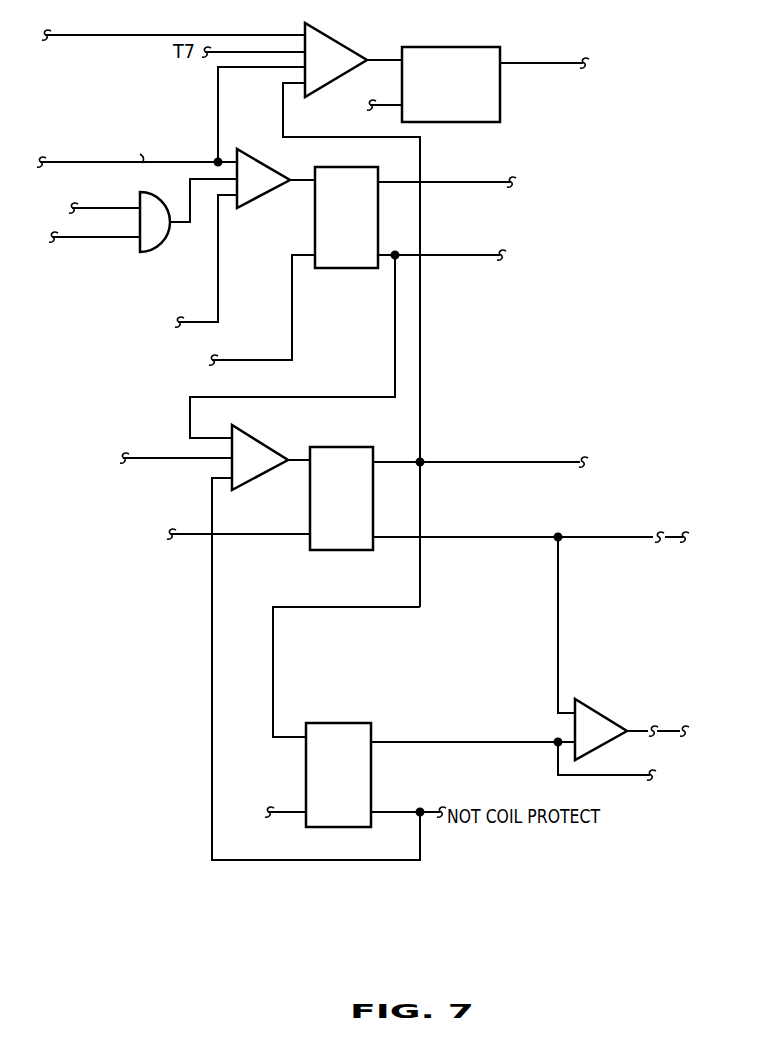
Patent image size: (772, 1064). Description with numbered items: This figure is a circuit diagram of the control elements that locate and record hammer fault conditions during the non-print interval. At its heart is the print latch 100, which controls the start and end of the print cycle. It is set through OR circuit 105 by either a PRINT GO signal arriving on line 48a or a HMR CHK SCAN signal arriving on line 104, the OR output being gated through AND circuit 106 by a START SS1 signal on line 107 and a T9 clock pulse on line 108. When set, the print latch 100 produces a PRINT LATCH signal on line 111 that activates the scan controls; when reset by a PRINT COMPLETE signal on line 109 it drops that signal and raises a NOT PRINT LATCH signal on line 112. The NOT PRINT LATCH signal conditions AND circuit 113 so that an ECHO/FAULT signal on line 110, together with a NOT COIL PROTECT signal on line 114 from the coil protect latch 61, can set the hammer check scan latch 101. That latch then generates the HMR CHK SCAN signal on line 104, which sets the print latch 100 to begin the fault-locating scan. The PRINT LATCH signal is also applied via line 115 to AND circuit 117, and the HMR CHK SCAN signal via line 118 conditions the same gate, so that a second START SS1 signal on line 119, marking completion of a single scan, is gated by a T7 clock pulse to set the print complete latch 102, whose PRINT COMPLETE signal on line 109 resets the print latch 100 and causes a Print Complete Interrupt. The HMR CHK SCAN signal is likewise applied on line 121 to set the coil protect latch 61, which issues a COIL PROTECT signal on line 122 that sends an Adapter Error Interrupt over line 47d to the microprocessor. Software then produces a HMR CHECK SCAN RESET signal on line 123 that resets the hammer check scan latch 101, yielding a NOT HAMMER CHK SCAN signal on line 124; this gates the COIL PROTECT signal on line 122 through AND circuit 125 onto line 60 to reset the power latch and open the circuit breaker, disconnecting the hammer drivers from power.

The print latch 100 is at (355, 268).
The hammer check scan latch 101 is at (344, 550).
The print complete latch 102 is at (500, 115).
The HMR CHK SCAN line 104 is at (128, 238).
The OR circuit 105 is at (170, 201).
The AND circuit 106 is at (268, 200).
The start SS1 line 107 is at (192, 163).
The T9 clock pulse line 108 is at (215, 289).
The PRINT COMPLETE line 109 is at (555, 63).
The echo/fault line 110 is at (202, 458).
The PRINT LATCH line 111 is at (477, 184).
The NOT PRINT LATCH line 112 is at (477, 259).
The AND circuit 113 is at (278, 446).
The NOT COIL PROTECT line 114 is at (206, 506).
The PRINT LATCH line to AND circuit 115 is at (270, 34).
The AND circuit 117 is at (340, 39).
The HMR CHK SCAN conditioning line 118 is at (284, 101).
The second START SS1 line 119 is at (218, 102).
The coil protect set line 121 is at (353, 613).
The COIL PROTECT line 122 is at (528, 746).
The HMR CHECK SCAN RESET line 123 is at (277, 535).
The NOT HAMMER CHK SCAN line 124 is at (510, 537).
The AND circuit 125 is at (612, 718).
The power latch reset line 60 is at (658, 719).
The coil protect latch 61 is at (371, 773).
The AEI line 47d is at (622, 775).
The PRINT GO line 48a is at (121, 205).